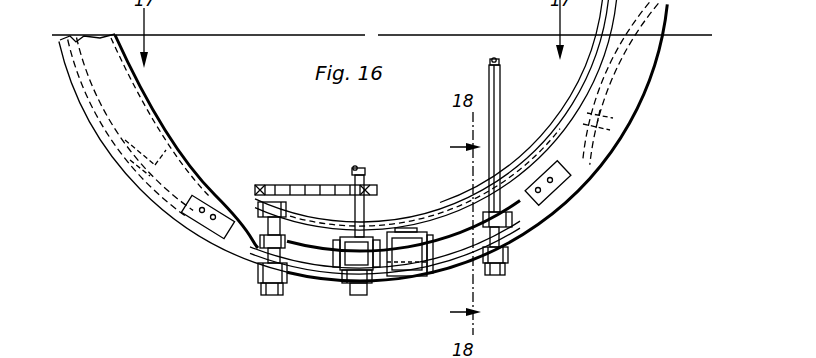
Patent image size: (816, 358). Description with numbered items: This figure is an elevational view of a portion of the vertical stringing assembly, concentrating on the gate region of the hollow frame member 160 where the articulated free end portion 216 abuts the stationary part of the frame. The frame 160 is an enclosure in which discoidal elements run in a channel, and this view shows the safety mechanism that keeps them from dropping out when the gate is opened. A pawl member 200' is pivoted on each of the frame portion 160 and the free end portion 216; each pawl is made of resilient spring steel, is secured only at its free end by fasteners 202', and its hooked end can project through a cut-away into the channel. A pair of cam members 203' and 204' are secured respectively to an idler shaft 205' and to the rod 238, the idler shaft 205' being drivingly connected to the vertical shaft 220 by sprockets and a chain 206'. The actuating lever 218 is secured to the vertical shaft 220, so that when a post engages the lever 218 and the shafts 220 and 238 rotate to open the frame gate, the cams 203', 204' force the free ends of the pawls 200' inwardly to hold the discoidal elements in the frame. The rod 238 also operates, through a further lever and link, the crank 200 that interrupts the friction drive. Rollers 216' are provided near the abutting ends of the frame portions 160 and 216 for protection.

The hollow frame member 160 is at (645, 93).
The crank 200 is at (403, 250).
The pawl member 200' is at (385, 266).
The fasteners 202' is at (563, 189).
The cam member 203' is at (238, 246).
The cam member 204' is at (526, 243).
The idler shaft 205' is at (240, 278).
The chain 206' is at (316, 164).
The free end portion 216 is at (189, 235).
The rollers 216' is at (427, 268).
The actuating lever 218 is at (356, 287).
The vertical shaft 220 is at (367, 210).
The rod 238 is at (502, 86).